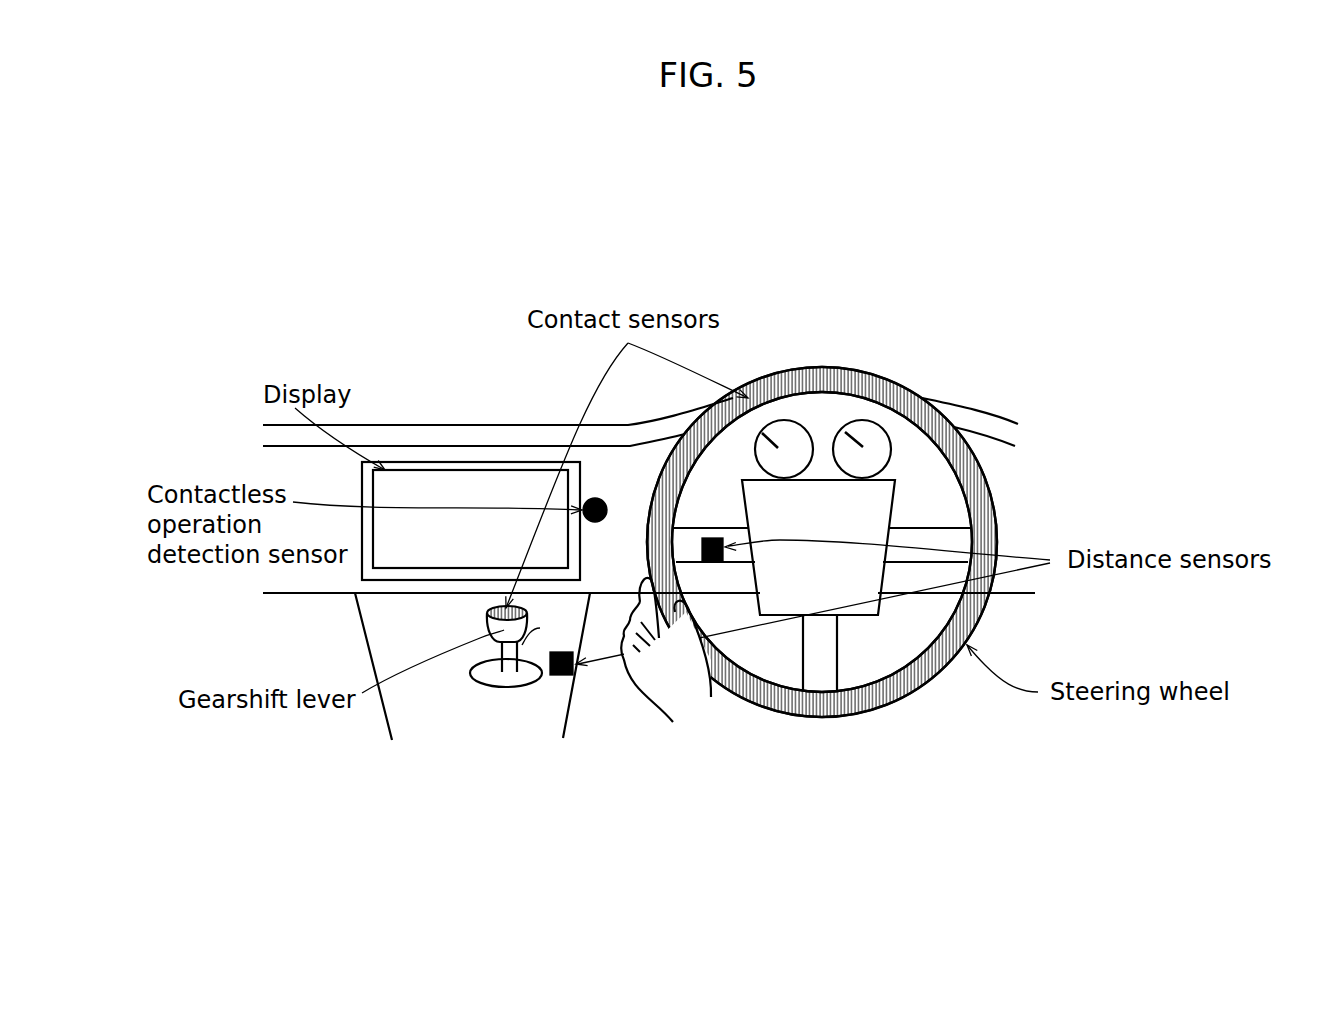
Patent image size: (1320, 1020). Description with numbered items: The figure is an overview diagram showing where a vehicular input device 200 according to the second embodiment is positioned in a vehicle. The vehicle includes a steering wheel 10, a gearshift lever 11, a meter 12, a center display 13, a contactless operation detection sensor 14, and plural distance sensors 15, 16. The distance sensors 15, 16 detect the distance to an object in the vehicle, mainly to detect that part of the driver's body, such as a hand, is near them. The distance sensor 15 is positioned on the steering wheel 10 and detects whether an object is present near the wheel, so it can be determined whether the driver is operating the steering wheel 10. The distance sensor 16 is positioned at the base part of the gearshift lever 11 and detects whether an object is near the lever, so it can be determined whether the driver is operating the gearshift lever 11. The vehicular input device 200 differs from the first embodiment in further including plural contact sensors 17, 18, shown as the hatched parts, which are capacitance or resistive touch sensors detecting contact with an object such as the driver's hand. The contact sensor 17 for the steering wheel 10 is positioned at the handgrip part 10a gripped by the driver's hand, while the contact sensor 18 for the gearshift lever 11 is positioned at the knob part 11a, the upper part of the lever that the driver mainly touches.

The vehicular input device 200 is at (970, 283).
The steering wheel 10 is at (923, 387).
The handgrip part 10a is at (993, 502).
The gearshift lever 11 is at (492, 632).
The knob part 11a is at (498, 642).
The meter 12 is at (777, 420).
The center display 13 is at (463, 467).
The contactless operation detection sensor 14 is at (596, 497).
The distance sensor 15 is at (721, 563).
The distance sensor 16 is at (561, 675).
The contact sensor 17 is at (843, 382).
The contact sensor 18 is at (542, 633).